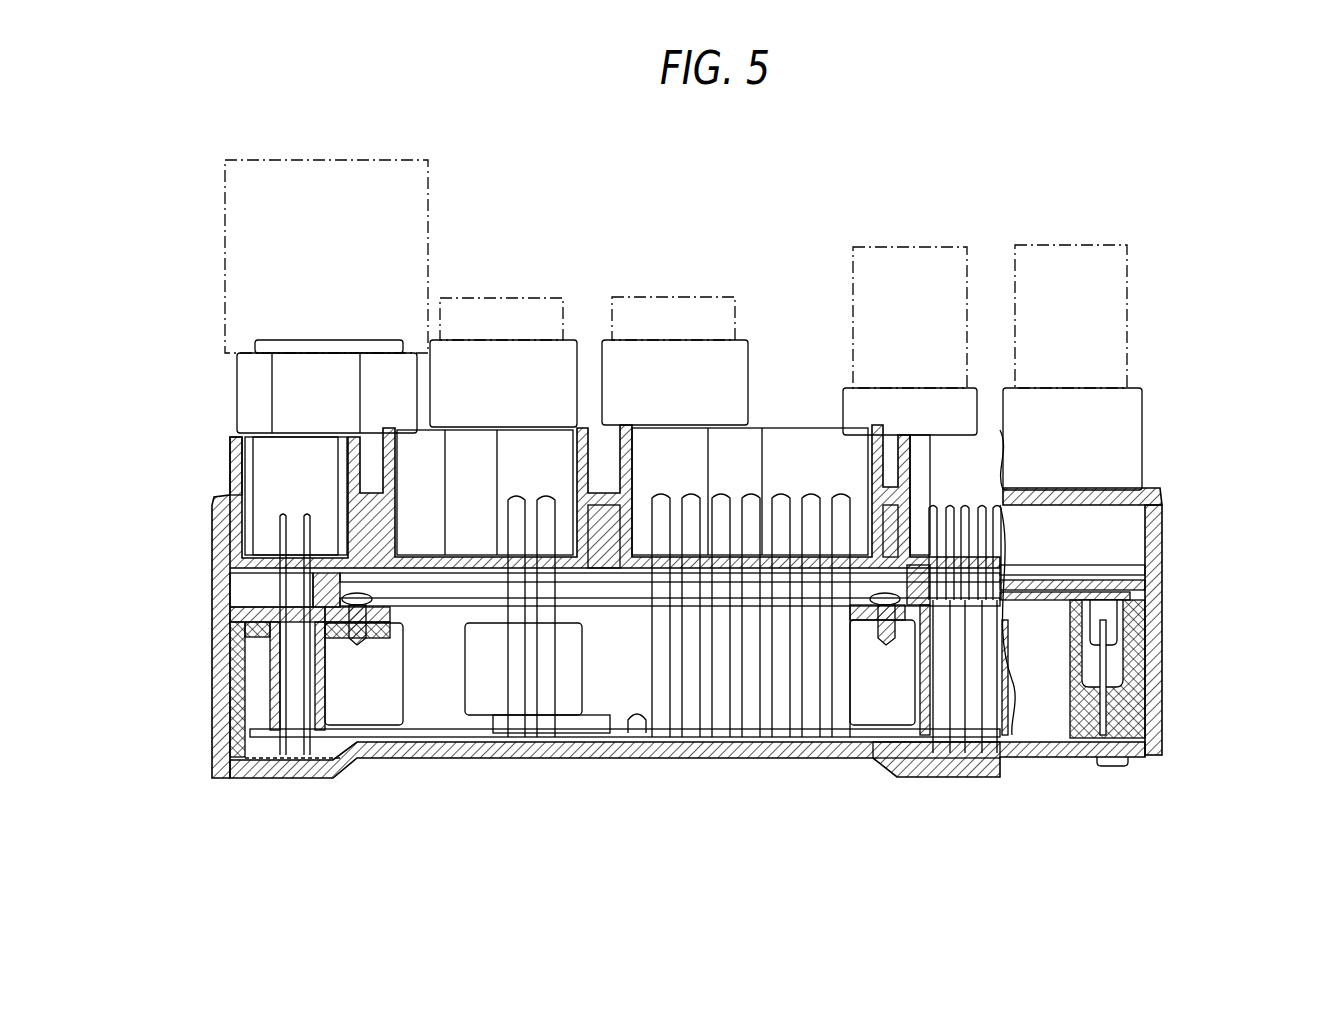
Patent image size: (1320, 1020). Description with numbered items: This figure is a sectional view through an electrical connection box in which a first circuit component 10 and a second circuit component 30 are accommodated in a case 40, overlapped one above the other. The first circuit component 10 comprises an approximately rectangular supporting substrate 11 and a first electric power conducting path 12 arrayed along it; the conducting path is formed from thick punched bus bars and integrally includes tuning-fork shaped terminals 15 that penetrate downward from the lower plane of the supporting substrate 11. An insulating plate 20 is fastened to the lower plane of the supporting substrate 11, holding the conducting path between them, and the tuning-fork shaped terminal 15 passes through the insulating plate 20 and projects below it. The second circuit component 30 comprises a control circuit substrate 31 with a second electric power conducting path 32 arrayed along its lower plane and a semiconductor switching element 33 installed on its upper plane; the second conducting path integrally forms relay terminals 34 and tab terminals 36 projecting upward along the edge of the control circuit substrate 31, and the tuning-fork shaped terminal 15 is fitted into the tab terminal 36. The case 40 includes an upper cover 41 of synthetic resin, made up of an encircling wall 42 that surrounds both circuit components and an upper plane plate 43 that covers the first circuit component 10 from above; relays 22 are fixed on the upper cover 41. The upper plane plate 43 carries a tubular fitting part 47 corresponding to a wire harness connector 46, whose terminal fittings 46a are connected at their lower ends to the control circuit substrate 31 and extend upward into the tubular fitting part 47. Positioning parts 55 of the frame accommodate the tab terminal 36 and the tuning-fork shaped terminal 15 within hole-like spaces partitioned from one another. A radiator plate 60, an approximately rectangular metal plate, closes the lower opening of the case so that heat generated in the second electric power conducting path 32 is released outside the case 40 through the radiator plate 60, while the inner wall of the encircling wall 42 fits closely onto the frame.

The first circuit component 10 is at (1172, 405).
The supporting substrate 11 is at (1050, 560).
The first electric power conducting path 12 is at (1100, 565).
The tuning-fork shaped terminal 15 is at (1148, 577).
The insulating plate 20 is at (1030, 600).
The relay 22 is at (483, 298).
The second circuit component 30 is at (537, 760).
The control circuit substrate 31 is at (637, 725).
The second electric power conducting path 32 is at (672, 740).
The semiconductor switching element 33 is at (483, 660).
The relay terminal 34 is at (750, 675).
The tab terminal 36 is at (1108, 700).
The case 40 is at (210, 422).
The upper cover 41 is at (1155, 490).
The encircling wall 42 is at (1155, 612).
The upper plane plate 43 is at (1097, 490).
The wire harness connector 46 is at (277, 682).
The terminal fitting 46a is at (283, 527).
The tubular fitting part 47 is at (230, 455).
The positioning part 55 is at (1150, 667).
The radiator plate 60 is at (830, 745).